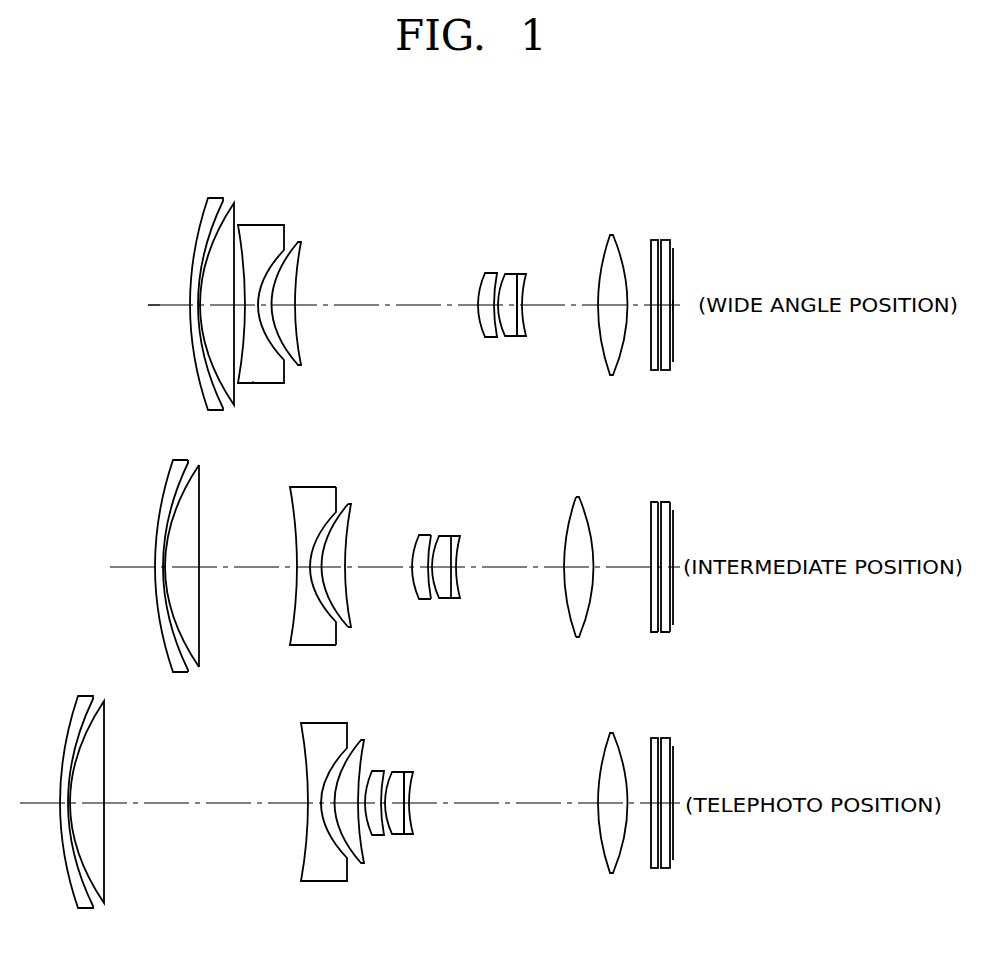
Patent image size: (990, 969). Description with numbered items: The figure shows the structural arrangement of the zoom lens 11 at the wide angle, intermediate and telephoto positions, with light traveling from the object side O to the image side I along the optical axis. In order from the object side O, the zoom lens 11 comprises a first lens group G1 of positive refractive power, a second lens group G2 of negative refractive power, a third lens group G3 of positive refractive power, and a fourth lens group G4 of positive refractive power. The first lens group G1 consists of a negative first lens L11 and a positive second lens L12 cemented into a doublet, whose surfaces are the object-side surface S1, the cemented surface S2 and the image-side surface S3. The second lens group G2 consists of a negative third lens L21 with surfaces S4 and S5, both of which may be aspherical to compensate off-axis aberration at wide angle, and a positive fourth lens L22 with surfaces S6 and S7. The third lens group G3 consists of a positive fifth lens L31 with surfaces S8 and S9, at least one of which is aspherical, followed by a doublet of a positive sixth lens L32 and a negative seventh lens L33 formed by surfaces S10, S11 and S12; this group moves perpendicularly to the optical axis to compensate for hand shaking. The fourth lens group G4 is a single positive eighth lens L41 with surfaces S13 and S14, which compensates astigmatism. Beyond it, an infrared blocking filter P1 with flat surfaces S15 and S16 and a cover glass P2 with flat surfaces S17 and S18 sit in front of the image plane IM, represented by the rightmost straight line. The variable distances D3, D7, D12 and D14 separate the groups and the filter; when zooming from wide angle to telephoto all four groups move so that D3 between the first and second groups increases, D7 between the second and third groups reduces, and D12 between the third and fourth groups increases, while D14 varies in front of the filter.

The zoom lens 11 is at (724, 147).
The object side O is at (139, 305).
The image side I is at (681, 305).
The first lens group G1 is at (237, 130).
The second lens group G2 is at (302, 130).
The third lens group G3 is at (535, 130).
The fourth lens group G4 is at (637, 130).
The first lens L11 is at (212, 200).
The second lens L12 is at (232, 203).
The third lens L21 is at (272, 230).
The fourth lens L22 is at (300, 245).
The fifth lens L31 is at (486, 276).
The sixth lens L32 is at (506, 276).
The seventh lens L33 is at (530, 275).
The eighth lens L41 is at (612, 237).
The infrared blocking filter P1 is at (653, 240).
The cover glass P2 is at (665, 240).
The image plane IM is at (676, 262).
The variable distance D3 is at (253, 381).
The variable distance D7 is at (404, 308).
The variable distance D12 is at (558, 308).
The variable distance D14 is at (632, 308).
The lens surface S1 is at (163, 493).
The lens surface S2 is at (182, 490).
The lens surface S3 is at (201, 503).
The lens surface S4 is at (292, 527).
The lens surface S5 is at (318, 525).
The lens surface S6 is at (339, 510).
The lens surface S7 is at (351, 535).
The lens surface S8 is at (413, 555).
The lens surface S9 is at (418, 545).
The lens surface S10 is at (436, 540).
The lens surface S11 is at (455, 545).
The lens surface S12 is at (459, 562).
The lens surface S13 is at (573, 535).
The lens surface S14 is at (591, 505).
The lens surface S15 is at (651, 549).
The lens surface S16 is at (658, 514).
The lens surface S17 is at (658, 505).
The lens surface S18 is at (672, 510).